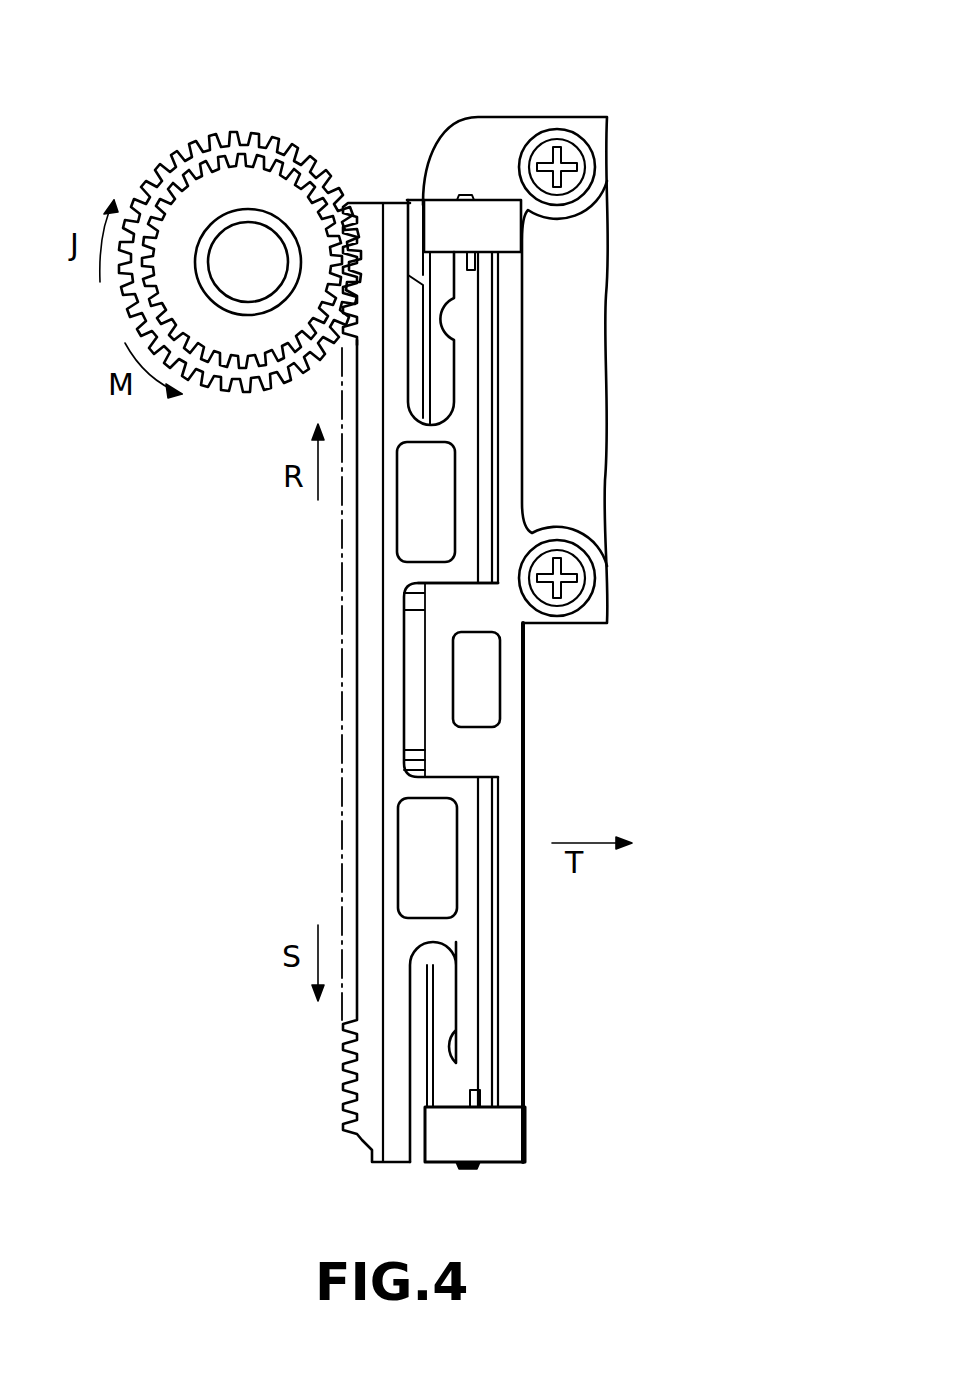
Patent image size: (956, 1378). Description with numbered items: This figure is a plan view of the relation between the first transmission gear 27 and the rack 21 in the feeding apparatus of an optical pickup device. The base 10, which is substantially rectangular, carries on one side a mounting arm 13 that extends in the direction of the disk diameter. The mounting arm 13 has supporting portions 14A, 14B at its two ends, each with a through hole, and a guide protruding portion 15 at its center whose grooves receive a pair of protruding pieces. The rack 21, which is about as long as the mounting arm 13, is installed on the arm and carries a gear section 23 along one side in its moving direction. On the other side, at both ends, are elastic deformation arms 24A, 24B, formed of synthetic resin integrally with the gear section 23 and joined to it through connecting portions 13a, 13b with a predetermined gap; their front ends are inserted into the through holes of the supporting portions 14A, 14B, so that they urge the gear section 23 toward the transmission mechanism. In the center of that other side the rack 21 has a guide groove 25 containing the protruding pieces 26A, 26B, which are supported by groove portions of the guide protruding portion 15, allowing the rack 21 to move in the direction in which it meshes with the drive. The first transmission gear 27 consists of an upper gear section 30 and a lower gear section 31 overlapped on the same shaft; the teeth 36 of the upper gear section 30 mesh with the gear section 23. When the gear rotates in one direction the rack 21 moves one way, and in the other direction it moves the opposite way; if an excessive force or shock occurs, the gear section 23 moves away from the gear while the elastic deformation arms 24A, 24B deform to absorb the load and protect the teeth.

The base 10 is at (597, 300).
The mounting arm 13 is at (432, 683).
The connecting portion 13a is at (428, 433).
The connecting portion 13b is at (430, 928).
The supporting portion 14A is at (483, 213).
The supporting portion 14B is at (513, 1133).
The guide protruding portion 15 is at (500, 703).
The rack 21 is at (300, 585).
The gear section 23 is at (343, 843).
The elastic deformation arm 24A is at (460, 262).
The elastic deformation arm 24B is at (472, 990).
The guide groove 25 is at (475, 586).
The protruding piece 26A is at (422, 602).
The protruding piece 26B is at (422, 760).
The first transmission gear 27 is at (245, 72).
The upper gear section 30 is at (195, 158).
The lower gear section 31 is at (150, 173).
The teeth 36 is at (346, 258).